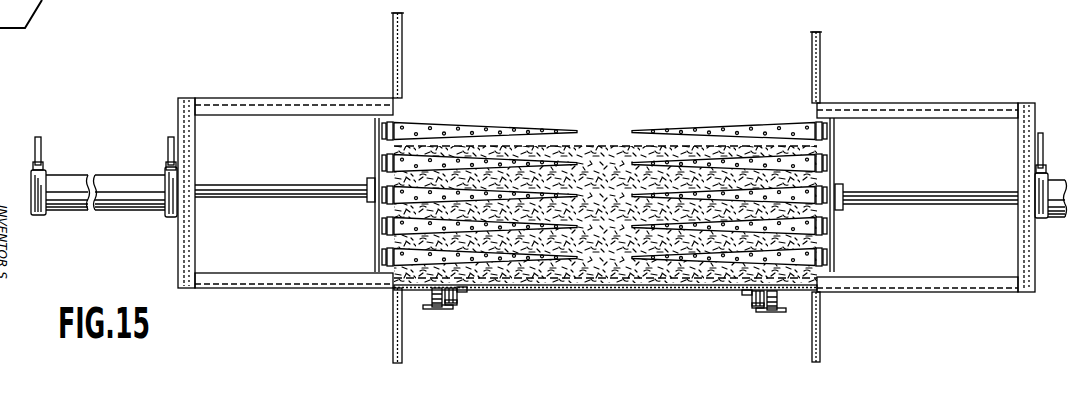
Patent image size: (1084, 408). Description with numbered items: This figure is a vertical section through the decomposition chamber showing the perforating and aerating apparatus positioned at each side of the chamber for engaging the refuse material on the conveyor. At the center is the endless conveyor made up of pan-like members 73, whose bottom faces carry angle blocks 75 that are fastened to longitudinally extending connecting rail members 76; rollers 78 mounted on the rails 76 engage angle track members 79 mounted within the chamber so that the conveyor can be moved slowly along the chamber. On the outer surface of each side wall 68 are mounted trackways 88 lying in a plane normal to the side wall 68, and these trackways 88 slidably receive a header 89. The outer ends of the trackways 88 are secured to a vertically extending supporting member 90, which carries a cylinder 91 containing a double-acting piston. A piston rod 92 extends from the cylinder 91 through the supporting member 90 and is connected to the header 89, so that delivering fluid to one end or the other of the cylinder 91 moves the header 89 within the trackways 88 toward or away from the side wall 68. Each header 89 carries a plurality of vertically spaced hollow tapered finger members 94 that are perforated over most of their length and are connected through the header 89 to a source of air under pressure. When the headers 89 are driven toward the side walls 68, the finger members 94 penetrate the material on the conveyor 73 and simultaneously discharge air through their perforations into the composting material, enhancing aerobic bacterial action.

The side walls 68 is at (393, 51).
The pan-like members 73 is at (567, 290).
The angle blocks 75 is at (457, 297).
The connecting rail members 76 is at (455, 306).
The rollers 78 is at (430, 295).
The angle track members 79 is at (440, 310).
The trackways 88 is at (265, 98).
The headers 89 is at (374, 174).
The supporting member 90 is at (185, 122).
The cylinder 91 is at (127, 183).
The piston rod 92 is at (41, 153).
The hollow tapered finger members 94 is at (546, 131).